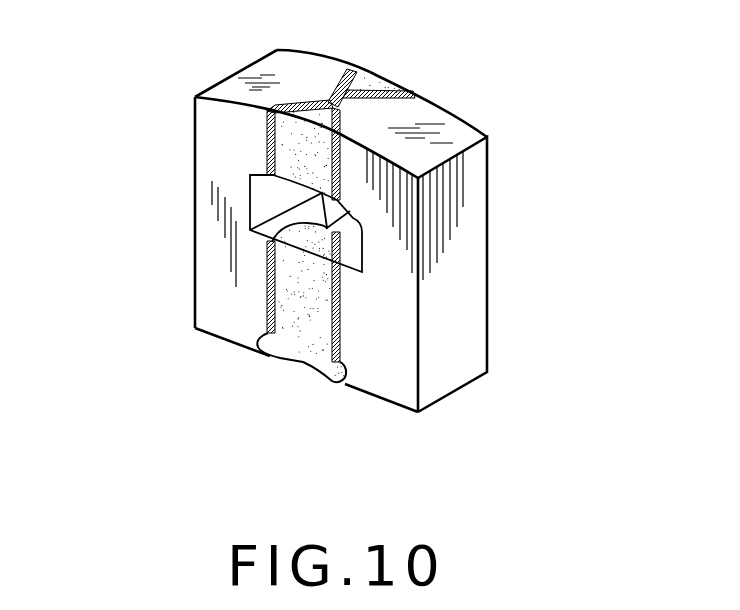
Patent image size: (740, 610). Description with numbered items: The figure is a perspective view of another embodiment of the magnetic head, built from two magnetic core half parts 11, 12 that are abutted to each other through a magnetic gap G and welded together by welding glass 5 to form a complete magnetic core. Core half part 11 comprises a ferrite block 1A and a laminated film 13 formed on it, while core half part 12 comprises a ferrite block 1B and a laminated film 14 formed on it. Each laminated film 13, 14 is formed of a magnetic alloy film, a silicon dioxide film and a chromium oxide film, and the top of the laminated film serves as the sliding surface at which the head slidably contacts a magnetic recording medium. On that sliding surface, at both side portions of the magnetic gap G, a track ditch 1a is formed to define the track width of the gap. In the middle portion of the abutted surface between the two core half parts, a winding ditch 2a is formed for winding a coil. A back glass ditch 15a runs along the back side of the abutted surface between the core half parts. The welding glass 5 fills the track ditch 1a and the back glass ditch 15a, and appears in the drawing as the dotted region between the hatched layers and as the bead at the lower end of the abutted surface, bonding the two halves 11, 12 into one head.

The ferrite block 1A is at (212, 143).
The ferrite block 1B is at (463, 137).
The track ditch 1a is at (303, 115).
The winding ditch 2a is at (268, 228).
The welding glass 5 is at (290, 152).
The magnetic core half part 11 is at (230, 203).
The magnetic core half part 12 is at (470, 242).
The laminated film 13 is at (347, 68).
The laminated film 14 is at (416, 94).
The back glass ditch 15a is at (340, 376).
The magnetic gap G is at (330, 103).